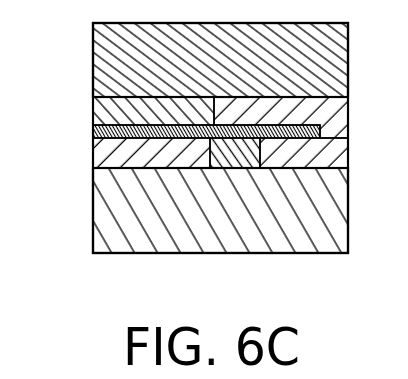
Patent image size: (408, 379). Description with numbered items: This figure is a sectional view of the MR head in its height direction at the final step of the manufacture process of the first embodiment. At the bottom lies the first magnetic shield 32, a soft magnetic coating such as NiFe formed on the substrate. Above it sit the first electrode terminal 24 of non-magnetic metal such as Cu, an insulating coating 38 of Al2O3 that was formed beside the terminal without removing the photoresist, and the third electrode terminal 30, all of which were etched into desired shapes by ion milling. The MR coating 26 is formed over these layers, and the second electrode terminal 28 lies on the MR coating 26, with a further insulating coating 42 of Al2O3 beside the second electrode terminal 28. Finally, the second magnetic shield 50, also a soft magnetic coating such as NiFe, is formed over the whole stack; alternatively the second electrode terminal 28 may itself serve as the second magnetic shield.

The second magnetic shield 50 is at (348, 57).
The second electrode terminal 28 is at (93, 105).
The insulating coating 42 is at (348, 110).
The MR coating 26 is at (93, 132).
The first electrode terminal 24 is at (93, 160).
The insulating coating 38 is at (241, 152).
The third electrode terminal 30 is at (348, 158).
The first magnetic shield 32 is at (165, 242).